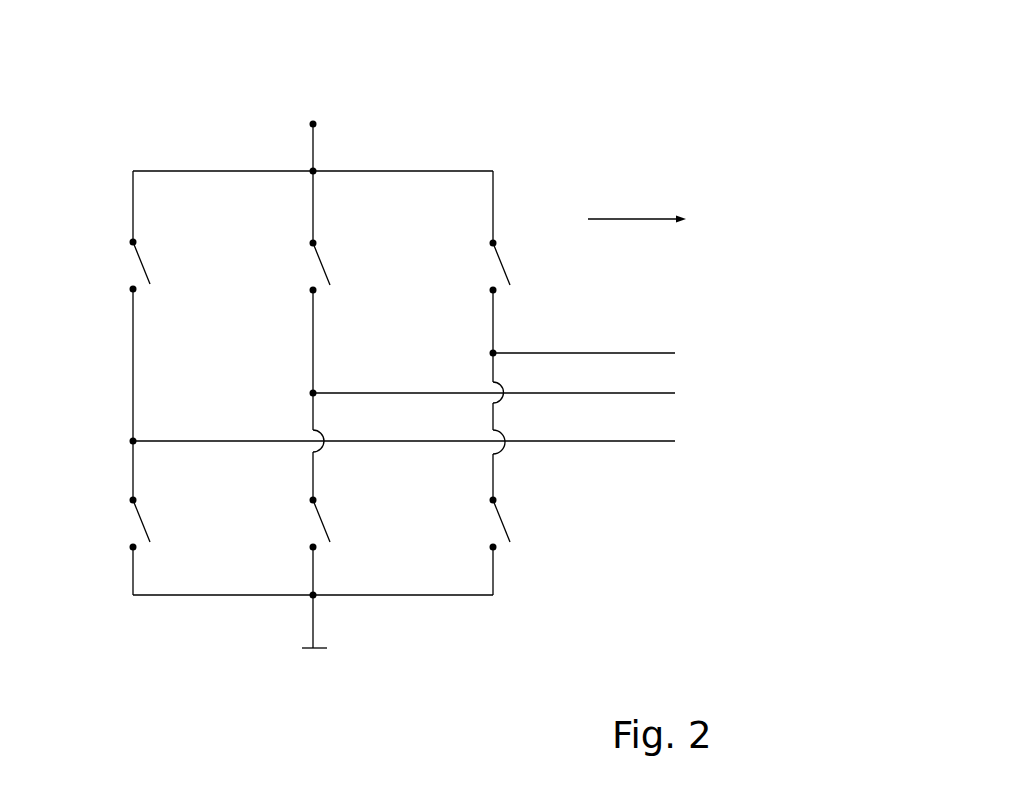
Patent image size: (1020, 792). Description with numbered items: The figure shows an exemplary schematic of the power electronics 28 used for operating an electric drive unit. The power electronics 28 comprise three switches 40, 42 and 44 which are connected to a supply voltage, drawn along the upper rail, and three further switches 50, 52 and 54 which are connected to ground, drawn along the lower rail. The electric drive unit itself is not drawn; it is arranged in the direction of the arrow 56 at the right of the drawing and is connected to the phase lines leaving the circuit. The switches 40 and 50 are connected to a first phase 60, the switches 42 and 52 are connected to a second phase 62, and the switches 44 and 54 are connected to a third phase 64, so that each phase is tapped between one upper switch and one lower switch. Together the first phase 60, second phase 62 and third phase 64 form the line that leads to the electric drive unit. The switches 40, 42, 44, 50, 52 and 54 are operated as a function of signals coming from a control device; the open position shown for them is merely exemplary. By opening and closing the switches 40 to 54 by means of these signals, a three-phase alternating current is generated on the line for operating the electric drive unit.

The power electronics 28 is at (145, 130).
The switch 40 is at (98, 256).
The switch 42 is at (272, 256).
The switch 44 is at (457, 256).
The switch 50 is at (98, 516).
The switch 52 is at (279, 516).
The switch 54 is at (458, 516).
The arrow 56 is at (625, 219).
The first phase 60 is at (630, 441).
The second phase 62 is at (535, 393).
The third phase 64 is at (625, 353).